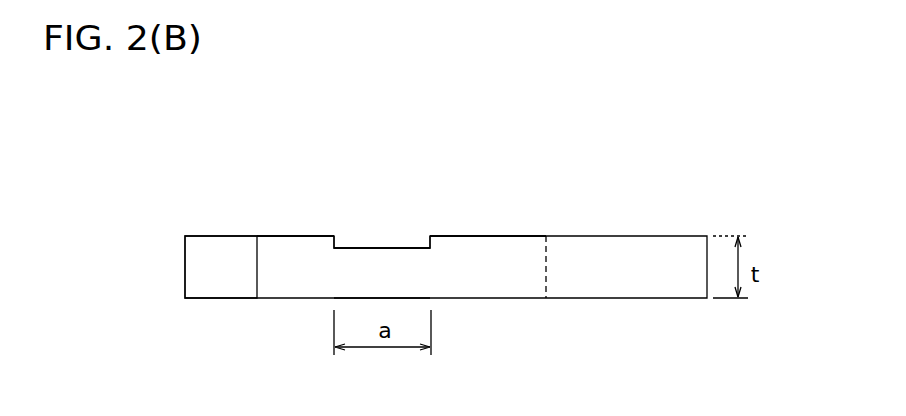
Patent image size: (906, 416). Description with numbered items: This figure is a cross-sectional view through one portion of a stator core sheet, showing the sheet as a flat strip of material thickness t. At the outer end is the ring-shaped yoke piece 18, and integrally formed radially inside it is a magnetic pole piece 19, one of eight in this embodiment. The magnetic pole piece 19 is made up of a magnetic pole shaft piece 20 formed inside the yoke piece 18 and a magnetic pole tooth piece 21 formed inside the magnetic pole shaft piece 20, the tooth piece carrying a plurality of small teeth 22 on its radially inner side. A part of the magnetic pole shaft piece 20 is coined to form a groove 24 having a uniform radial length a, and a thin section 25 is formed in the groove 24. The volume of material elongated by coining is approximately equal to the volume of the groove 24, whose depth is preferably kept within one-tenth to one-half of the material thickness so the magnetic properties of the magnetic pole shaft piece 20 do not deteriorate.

The yoke piece 18 is at (598, 247).
The magnetic pole piece 19 is at (318, 125).
The magnetic pole shaft piece 20 is at (453, 238).
The magnetic pole tooth piece 21 is at (275, 248).
The small teeth 22 is at (212, 263).
The groove 24 is at (377, 248).
The thin section 25 is at (400, 270).